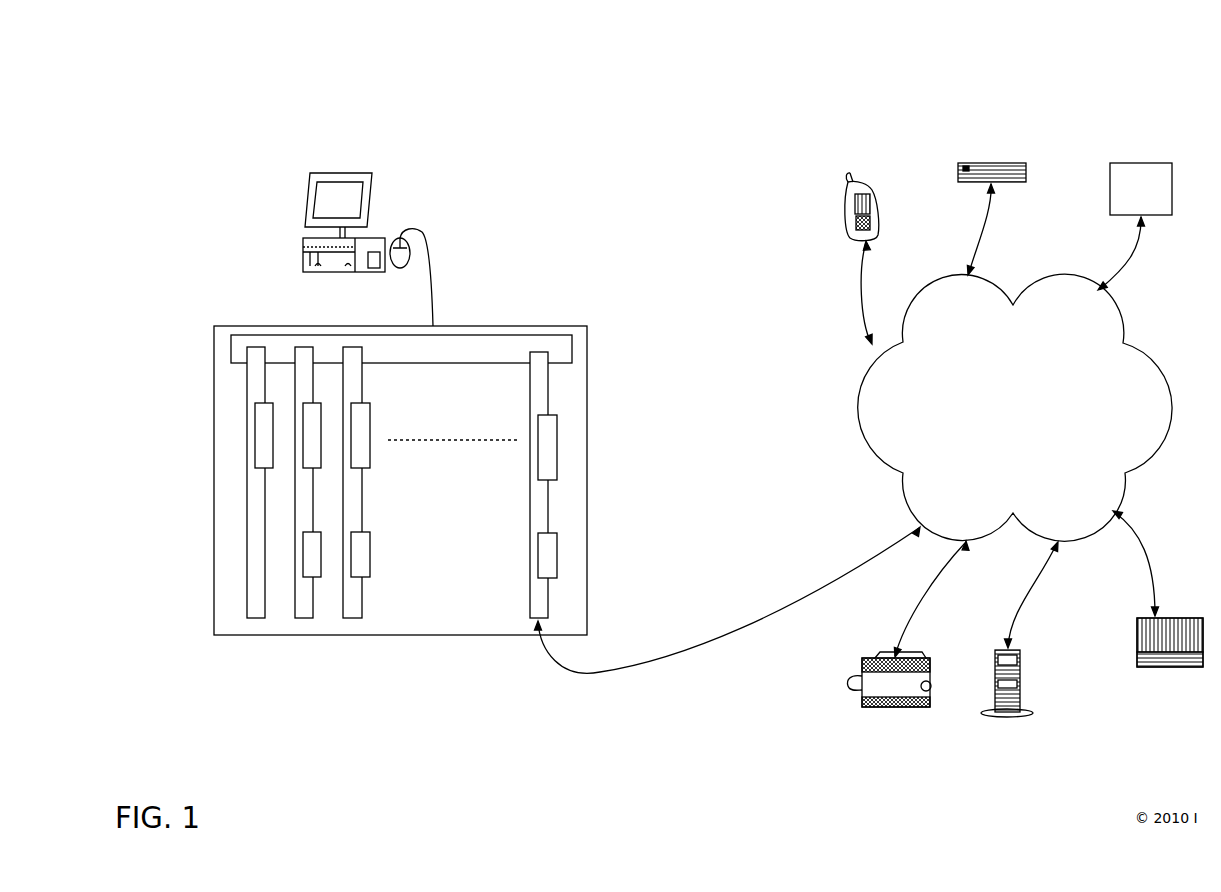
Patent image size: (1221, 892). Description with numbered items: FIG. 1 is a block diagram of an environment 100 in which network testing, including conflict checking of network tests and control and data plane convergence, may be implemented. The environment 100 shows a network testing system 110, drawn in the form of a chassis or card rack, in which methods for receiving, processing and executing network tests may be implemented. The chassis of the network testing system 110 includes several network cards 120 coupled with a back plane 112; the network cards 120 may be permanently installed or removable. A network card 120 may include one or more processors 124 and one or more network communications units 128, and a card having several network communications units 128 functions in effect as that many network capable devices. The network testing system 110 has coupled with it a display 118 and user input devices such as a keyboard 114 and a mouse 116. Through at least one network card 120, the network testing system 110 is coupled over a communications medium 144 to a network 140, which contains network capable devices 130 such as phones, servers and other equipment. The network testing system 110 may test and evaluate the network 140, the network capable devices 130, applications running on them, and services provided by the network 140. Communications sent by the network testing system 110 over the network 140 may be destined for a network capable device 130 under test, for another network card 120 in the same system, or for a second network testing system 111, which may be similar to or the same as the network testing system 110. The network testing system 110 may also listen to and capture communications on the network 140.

The environment 100 is at (194, 60).
The network testing system 110 is at (458, 326).
The second network testing system 111 is at (1135, 226).
The back plane 112 is at (572, 350).
The keyboard 114 is at (303, 254).
The mouse 116 is at (400, 270).
The display 118 is at (308, 203).
The network cards 120 is at (232, 617).
The processor 124 is at (557, 445).
The network communications unit 128 is at (557, 553).
The network capable devices 130 is at (1014, 439).
The network 140 is at (1015, 407).
The communications medium 144 is at (565, 670).